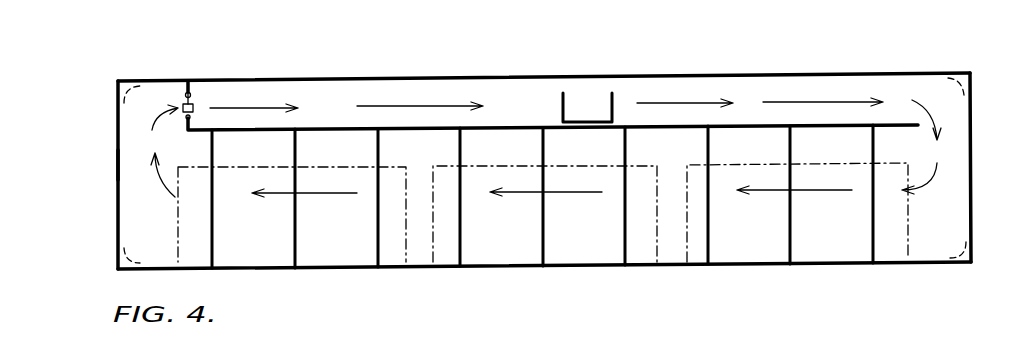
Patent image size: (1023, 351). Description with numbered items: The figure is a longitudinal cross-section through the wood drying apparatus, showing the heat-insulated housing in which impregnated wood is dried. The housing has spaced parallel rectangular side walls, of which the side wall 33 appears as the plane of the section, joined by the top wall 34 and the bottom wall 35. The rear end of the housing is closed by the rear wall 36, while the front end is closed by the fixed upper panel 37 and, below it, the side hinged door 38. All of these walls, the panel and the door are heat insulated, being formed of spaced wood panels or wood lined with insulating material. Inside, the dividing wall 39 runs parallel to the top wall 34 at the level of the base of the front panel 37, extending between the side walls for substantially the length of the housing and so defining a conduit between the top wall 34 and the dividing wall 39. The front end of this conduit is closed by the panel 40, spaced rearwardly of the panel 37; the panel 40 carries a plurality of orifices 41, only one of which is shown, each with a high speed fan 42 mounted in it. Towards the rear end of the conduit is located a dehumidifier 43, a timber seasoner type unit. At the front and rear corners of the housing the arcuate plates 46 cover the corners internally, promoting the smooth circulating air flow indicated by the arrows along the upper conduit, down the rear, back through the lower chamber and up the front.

The side wall 33 is at (163, 226).
The top wall 34 is at (533, 80).
The bottom wall 35 is at (484, 270).
The rear wall 36 is at (971, 173).
The fixed upper panel 37 is at (116, 103).
The side hinged door 38 is at (117, 167).
The dividing wall 39 is at (242, 128).
The panel 40 is at (195, 93).
The orifice 41 is at (200, 102).
The high speed fan 42 is at (186, 100).
The dehumidifier 43 is at (607, 102).
The arcuate plate 46 is at (125, 86).